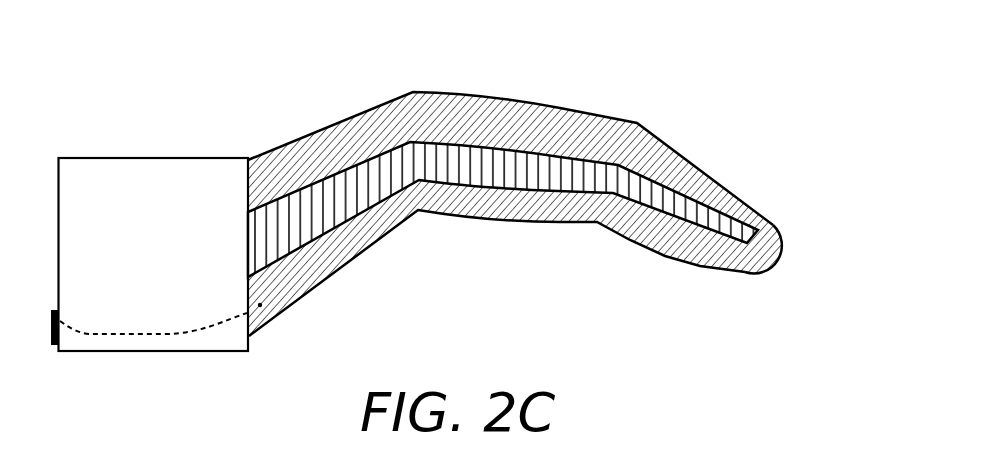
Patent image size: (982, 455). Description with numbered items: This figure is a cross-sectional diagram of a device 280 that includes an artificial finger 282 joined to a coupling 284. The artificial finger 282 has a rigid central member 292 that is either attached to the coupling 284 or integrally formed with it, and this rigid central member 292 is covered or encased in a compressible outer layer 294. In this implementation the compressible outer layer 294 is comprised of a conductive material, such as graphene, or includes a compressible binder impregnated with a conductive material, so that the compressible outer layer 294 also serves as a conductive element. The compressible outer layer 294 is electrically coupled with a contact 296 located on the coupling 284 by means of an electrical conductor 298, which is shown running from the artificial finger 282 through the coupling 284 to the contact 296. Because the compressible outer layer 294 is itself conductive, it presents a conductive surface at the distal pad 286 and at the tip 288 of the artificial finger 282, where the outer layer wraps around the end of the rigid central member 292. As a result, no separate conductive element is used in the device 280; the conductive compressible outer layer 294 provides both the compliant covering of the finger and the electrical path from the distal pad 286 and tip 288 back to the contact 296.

The device 280 is at (162, 72).
The artificial finger 282 is at (355, 93).
The coupling 284 is at (182, 158).
The distal pad 286 is at (680, 263).
The tip 288 is at (787, 243).
The rigid central member 292 is at (508, 148).
The compressible outer layer 294 is at (510, 115).
The contact 296 is at (60, 320).
The electrical conductor 298 is at (228, 318).